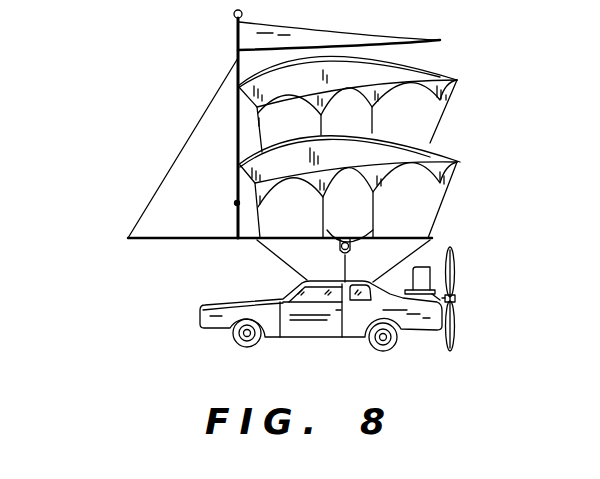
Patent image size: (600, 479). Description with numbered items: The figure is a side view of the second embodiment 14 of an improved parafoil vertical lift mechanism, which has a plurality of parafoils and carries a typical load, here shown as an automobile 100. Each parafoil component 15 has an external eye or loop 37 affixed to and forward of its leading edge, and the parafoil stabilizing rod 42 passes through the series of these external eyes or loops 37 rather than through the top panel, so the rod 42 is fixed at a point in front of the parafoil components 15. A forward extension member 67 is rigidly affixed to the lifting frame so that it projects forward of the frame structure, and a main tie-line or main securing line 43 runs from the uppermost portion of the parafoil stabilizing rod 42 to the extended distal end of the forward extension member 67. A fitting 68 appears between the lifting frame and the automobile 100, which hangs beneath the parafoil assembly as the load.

The second embodiment 14 is at (150, 75).
The parafoil component 15 is at (462, 153).
The external eye or loop 37 is at (245, 88).
The parafoil stabilizing rod 42 is at (238, 120).
The main tie-line or main securing line 43 is at (188, 140).
The forward extension member 67 is at (217, 237).
The swivel 68 is at (352, 249).
The automobile 100 is at (205, 305).